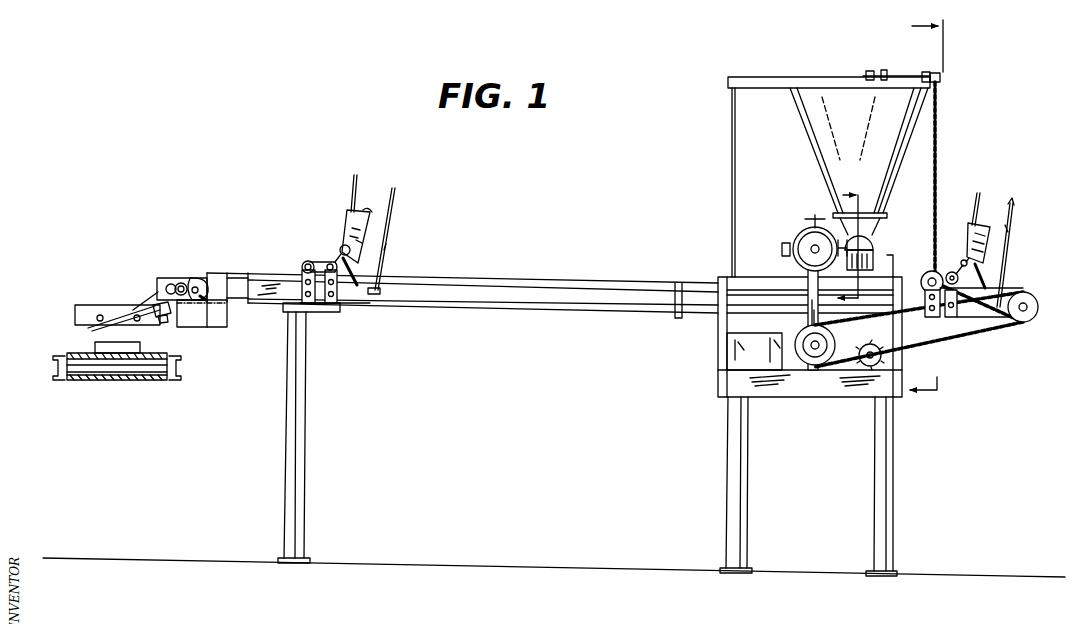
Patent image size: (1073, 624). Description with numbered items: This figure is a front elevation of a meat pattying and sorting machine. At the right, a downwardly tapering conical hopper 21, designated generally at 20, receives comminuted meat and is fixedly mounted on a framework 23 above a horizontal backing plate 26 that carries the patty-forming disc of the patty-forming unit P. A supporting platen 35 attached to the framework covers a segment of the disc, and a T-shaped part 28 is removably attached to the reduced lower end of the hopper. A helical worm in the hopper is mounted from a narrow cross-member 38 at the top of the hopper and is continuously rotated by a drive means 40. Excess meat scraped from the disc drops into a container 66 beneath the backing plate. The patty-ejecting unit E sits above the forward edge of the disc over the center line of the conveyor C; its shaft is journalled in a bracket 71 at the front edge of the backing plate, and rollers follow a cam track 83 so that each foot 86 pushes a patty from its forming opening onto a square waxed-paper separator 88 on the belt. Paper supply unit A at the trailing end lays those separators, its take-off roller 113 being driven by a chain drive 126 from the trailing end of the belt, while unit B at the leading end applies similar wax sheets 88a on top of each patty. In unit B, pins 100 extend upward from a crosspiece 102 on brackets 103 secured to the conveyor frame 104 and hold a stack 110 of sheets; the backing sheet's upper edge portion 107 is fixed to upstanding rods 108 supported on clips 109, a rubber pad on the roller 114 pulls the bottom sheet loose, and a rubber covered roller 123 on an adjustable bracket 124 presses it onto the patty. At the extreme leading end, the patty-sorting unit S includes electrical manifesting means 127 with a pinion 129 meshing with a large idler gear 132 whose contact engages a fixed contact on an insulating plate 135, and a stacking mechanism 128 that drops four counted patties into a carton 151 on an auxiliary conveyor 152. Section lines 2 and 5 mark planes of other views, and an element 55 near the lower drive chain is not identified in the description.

The hopper unit 20 is at (906, 145).
The hopper 21 is at (822, 150).
The framework 23 is at (716, 330).
The horizontal backing plate 26 is at (737, 277).
The T-shaped part 28 is at (882, 215).
The supporting platen 35 is at (896, 277).
The narrow cross-member 38 is at (780, 77).
The drive means 40 is at (897, 75).
The drive chain 55 is at (958, 332).
The container 66 is at (733, 347).
The bracket 71 is at (810, 262).
The cam track 83 is at (795, 250).
The foot 86 is at (818, 222).
The separator 88 is at (1011, 260).
The wax sheets 88a is at (346, 230).
The pins 100 is at (352, 178).
The crosspiece 102 is at (340, 249).
The brackets 103 is at (336, 303).
The conveyor frame 104 is at (361, 305).
The upper edge portion 107 is at (396, 190).
The upstanding rods 108 is at (386, 244).
The clips 109 is at (381, 293).
The stack 110 is at (345, 218).
The take-off roller pad 113 is at (935, 270).
The roller 114 is at (322, 262).
The rubber covered roller 123 is at (301, 267).
The adjustable bracket 124 is at (302, 291).
The chain drive 126 is at (1015, 294).
The electrical manifesting means 127 is at (191, 272).
The stacking mechanism 128 is at (129, 328).
The pinion 129 is at (176, 284).
The idler gear 132 is at (185, 302).
The insulating plate 135 is at (202, 278).
The carton 151 is at (92, 343).
The auxiliary conveyor 152 is at (148, 352).
The patty-sorting unit S is at (130, 292).
The paper supply unit B is at (366, 200).
The conveyor C is at (632, 280).
The patty-ejecting unit E is at (790, 232).
The patty-forming unit P is at (876, 245).
The paper supply unit A is at (985, 200).
The section line 2- 2 is at (918, 215).
The section line 5- 5 is at (857, 244).